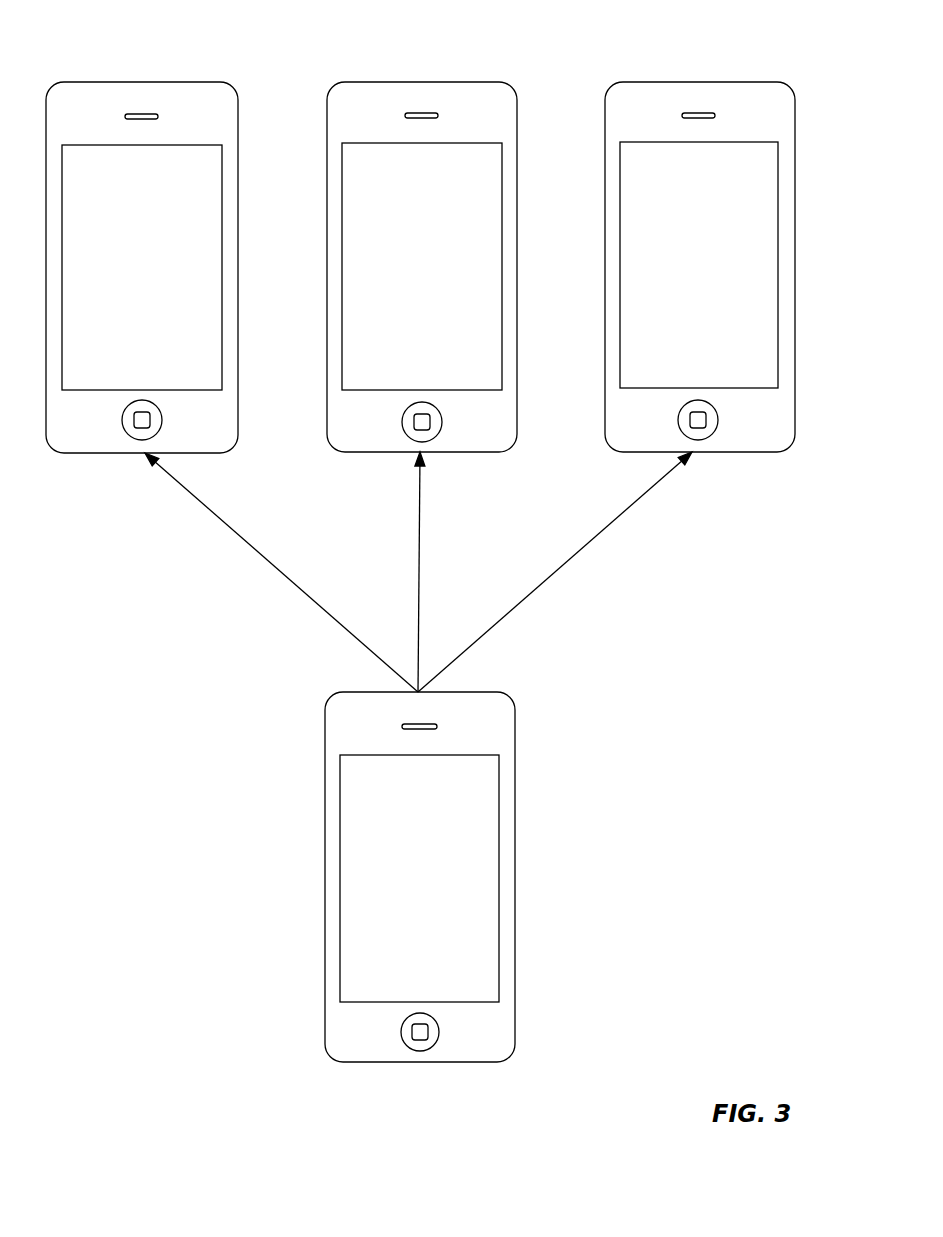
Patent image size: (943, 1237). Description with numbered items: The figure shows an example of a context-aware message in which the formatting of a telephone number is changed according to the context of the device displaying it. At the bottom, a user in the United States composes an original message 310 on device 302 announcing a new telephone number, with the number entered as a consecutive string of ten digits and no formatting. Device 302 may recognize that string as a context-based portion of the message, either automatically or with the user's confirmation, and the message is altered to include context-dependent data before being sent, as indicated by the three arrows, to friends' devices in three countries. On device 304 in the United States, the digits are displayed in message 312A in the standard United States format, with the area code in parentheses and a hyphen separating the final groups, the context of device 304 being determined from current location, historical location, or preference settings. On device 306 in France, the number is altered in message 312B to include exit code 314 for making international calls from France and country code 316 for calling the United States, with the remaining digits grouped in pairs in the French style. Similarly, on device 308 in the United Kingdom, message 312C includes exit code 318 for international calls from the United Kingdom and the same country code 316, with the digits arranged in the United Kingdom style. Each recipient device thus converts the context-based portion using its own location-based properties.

The device 302 is at (459, 888).
The device 304 is at (168, 277).
The device 306 is at (442, 277).
The device 308 is at (705, 277).
The original message 310 is at (407, 810).
The message 312A is at (137, 200).
The message 312B is at (411, 213).
The message 312C is at (691, 213).
The exit code 314 is at (313, 149).
The country code 316 is at (469, 114).
The exit code 318 is at (584, 153).